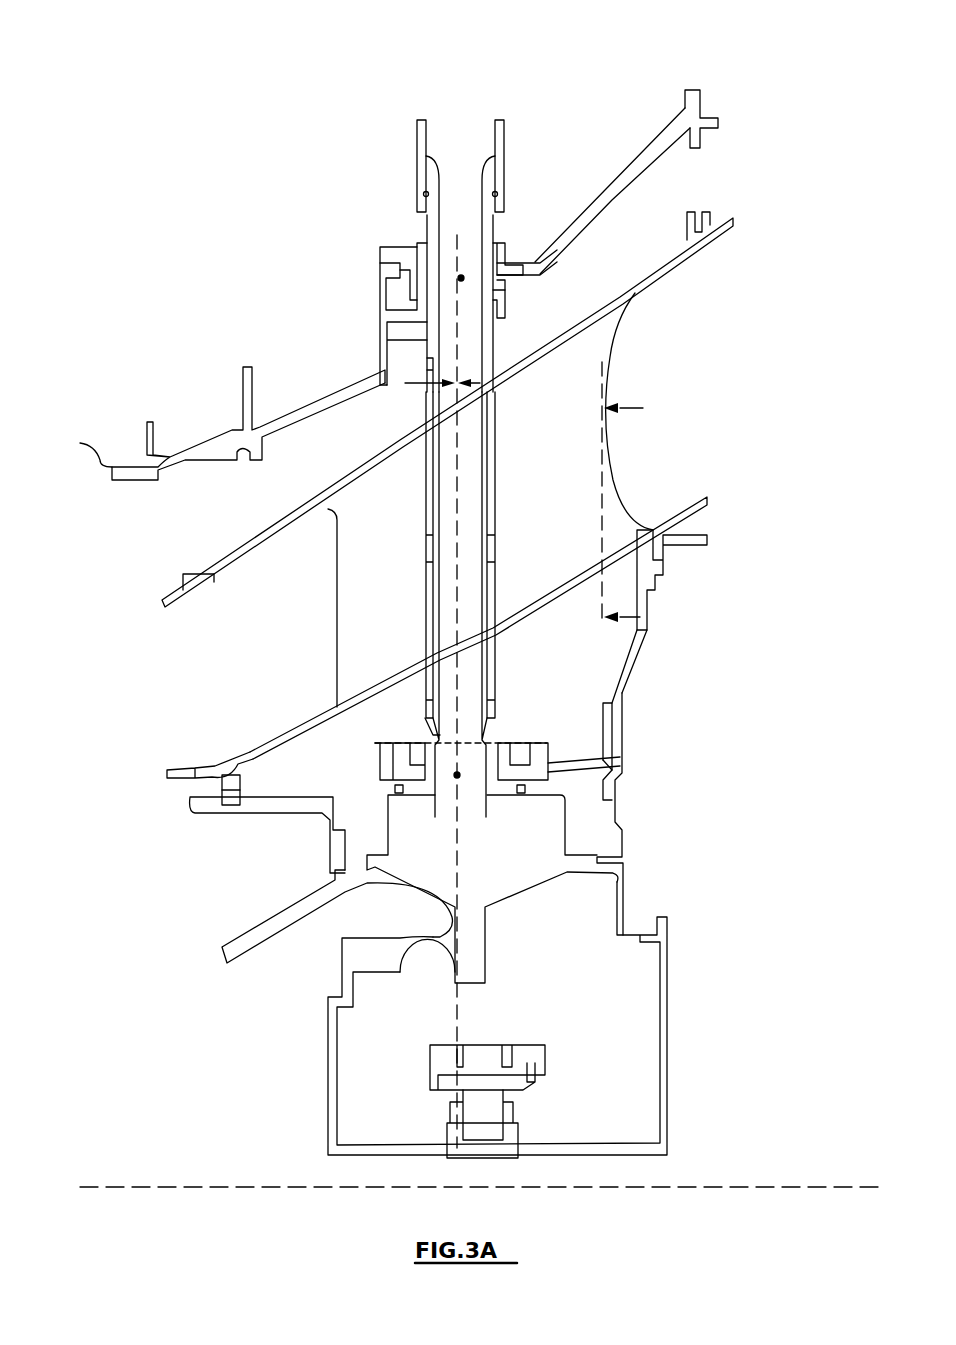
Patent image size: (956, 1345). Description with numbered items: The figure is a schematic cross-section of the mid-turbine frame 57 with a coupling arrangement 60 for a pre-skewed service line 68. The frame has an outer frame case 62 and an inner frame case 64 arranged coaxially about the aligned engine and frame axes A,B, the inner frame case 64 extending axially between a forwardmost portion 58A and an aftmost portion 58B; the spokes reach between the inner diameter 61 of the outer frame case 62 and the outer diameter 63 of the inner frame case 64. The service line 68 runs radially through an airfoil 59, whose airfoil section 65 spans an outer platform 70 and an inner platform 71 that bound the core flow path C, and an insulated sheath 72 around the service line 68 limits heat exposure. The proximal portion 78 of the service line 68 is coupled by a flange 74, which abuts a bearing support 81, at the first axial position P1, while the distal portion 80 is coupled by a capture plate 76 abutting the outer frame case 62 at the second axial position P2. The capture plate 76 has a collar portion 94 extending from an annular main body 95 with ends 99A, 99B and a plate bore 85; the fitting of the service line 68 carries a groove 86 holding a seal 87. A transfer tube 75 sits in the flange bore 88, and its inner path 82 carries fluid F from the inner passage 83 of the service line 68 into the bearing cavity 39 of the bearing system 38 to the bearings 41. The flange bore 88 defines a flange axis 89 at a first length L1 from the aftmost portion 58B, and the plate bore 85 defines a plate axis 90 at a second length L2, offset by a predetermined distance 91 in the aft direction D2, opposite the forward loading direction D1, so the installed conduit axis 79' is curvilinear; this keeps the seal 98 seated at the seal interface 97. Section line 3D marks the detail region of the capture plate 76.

The mid-turbine frame 57 is at (90, 100).
The coupling arrangement 60 is at (340, 180).
The airfoil 59 is at (125, 561).
The outer frame case 62 is at (718, 110).
The inner diameter of the outer frame case 61 is at (138, 481).
The outer platform 70 is at (235, 575).
The airfoil section 65 is at (337, 612).
The inner passage 83 is at (495, 430).
The service line 68 is at (415, 518).
The insulated sheath 72 is at (495, 500).
The proximal portion 78 is at (427, 695).
The conduit axis 79' is at (504, 604).
The plate axis 90 is at (460, 240).
The capture plate 76 is at (385, 249).
The collar portion 94 is at (380, 262).
The main body 95 is at (412, 300).
The distal portion 80 is at (427, 322).
The predetermined distance 91 is at (427, 375).
The end of the main body 99A is at (500, 244).
The end of the main body 99B is at (497, 300).
The plate bore 85 is at (500, 300).
The groove 86 is at (540, 268).
The seal 87 is at (497, 280).
The second axial position P2 is at (461, 278).
The first axial position P1 is at (457, 778).
The first length L1 is at (445, 617).
The second length L2 is at (445, 407).
The inner platform 71 is at (245, 752).
The flange 74 is at (545, 765).
The forwardmost portion 58A is at (193, 826).
The aftmost portion 58B is at (615, 702).
The outer diameter of the inner frame case 63 is at (190, 797).
The inner frame case 64 is at (612, 728).
The bearing support 81 is at (605, 808).
The flange bore 88 is at (400, 762).
The transfer tube 75 is at (503, 740).
The seal 98 is at (518, 785).
The seal interface 97 is at (398, 795).
The flange axis 89 is at (435, 735).
The inner path 82 is at (448, 845).
The bearing system 38 is at (318, 1050).
The bearing cavity 39 is at (568, 1007).
The bearings 41 is at (545, 1100).
The engine axis and frame axis A,B is at (160, 1186).
The core flow path C is at (185, 662).
The fluid F is at (461, 106).
The engine forward direction D1 is at (400, 40).
The engine aft direction D2 is at (555, 40).
The section line 3D is at (502, 220).